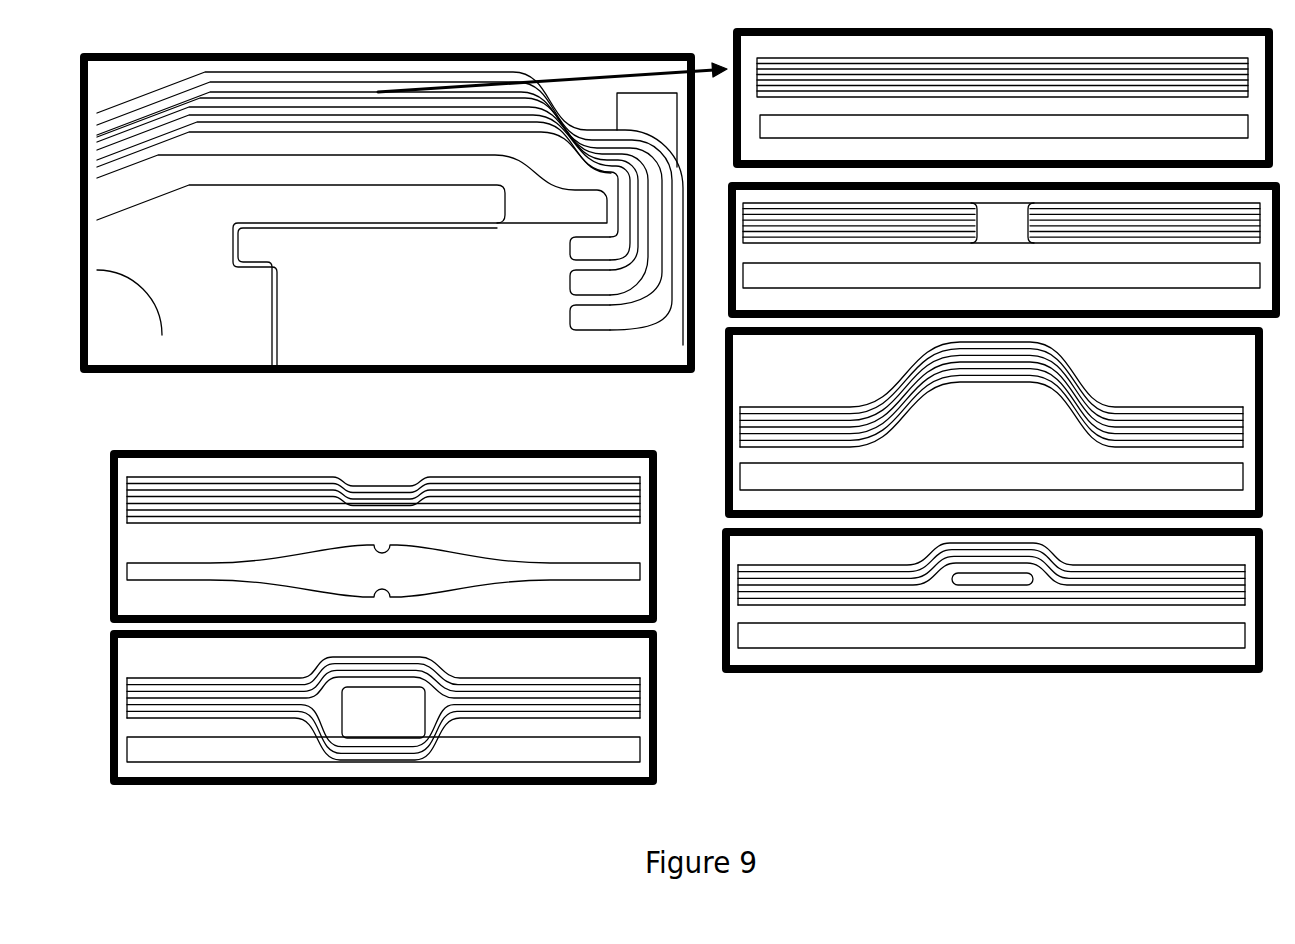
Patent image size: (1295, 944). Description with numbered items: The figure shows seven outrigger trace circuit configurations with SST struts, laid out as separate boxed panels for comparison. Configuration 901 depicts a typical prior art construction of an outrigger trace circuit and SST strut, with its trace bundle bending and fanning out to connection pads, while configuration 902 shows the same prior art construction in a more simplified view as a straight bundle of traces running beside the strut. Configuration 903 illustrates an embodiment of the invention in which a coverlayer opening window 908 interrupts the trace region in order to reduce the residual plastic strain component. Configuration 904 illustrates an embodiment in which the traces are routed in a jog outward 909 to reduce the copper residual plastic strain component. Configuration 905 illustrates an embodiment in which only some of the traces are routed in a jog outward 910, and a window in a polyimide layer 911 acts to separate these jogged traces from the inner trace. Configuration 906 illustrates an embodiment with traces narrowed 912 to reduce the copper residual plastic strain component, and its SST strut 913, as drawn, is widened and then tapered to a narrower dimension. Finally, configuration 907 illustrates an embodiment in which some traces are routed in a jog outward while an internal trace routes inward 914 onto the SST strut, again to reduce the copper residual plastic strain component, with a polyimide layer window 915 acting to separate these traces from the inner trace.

The configuration 901 is at (387, 213).
The configuration 902 is at (1003, 98).
The configuration 903 is at (1004, 250).
The configuration 904 is at (994, 422).
The configuration 905 is at (992, 600).
The configuration 906 is at (383, 536).
The configuration 907 is at (383, 707).
The coverlayer opening window 908 is at (1010, 225).
The jog outward 909 is at (992, 365).
The jog outward 910 is at (968, 550).
The polyimide layer 911 is at (992, 579).
The traces narrowed 912 is at (373, 508).
The SST strut 913 is at (390, 567).
The internal trace routes inward 914 is at (437, 745).
The polyimide layer window 915 is at (352, 702).